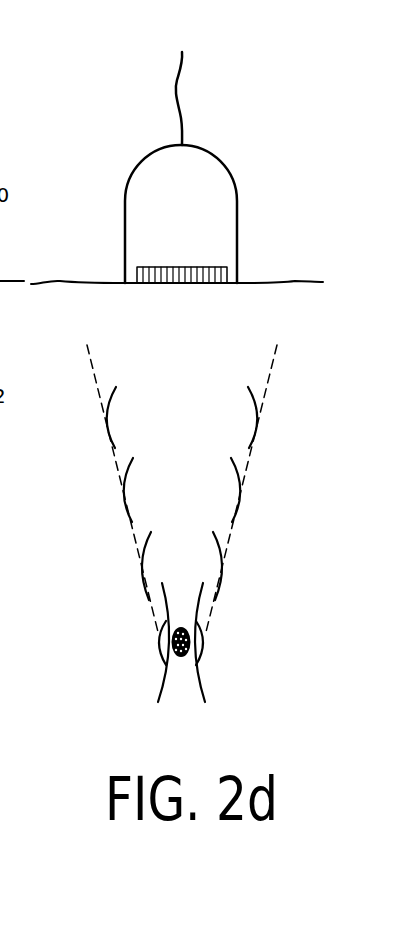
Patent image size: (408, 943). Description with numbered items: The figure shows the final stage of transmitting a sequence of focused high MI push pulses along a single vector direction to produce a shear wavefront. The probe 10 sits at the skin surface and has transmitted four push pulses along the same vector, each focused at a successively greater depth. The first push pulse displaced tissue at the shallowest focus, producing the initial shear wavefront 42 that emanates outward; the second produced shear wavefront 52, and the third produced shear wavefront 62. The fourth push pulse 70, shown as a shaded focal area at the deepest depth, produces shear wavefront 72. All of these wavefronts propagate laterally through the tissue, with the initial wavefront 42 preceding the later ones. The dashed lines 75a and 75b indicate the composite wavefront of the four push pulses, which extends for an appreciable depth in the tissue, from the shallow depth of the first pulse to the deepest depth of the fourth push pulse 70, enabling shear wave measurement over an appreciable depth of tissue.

The probe 10 is at (226, 213).
The dashed line 75a is at (88, 356).
The dashed line 75b is at (277, 357).
The shear wavefront 42 is at (105, 417).
The shear wavefront 52 is at (123, 490).
The shear wavefront 62 is at (141, 563).
The shear wavefront 72 is at (158, 642).
The fourth push pulse 70 is at (185, 655).